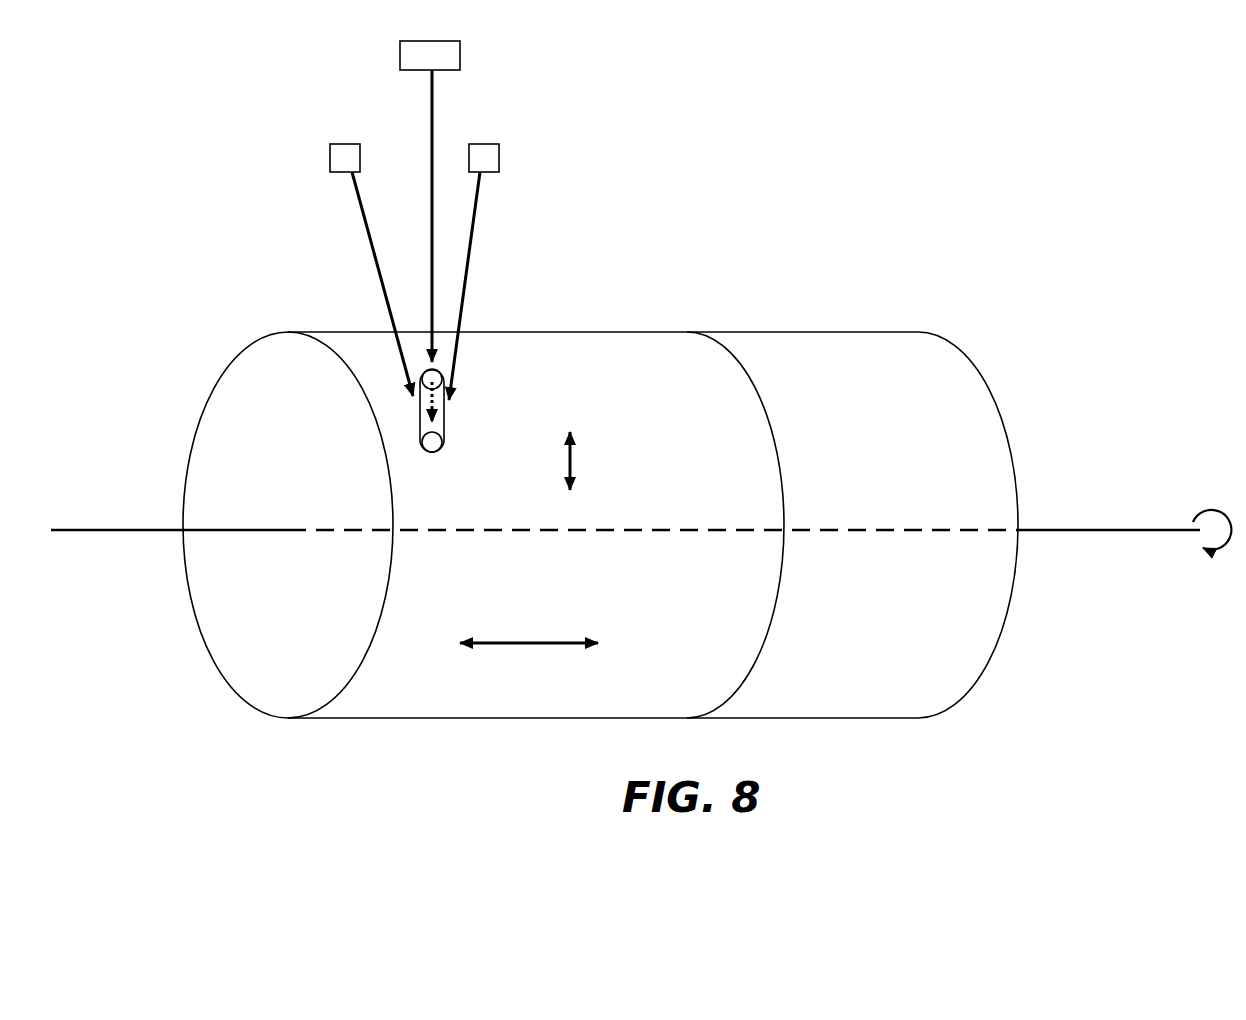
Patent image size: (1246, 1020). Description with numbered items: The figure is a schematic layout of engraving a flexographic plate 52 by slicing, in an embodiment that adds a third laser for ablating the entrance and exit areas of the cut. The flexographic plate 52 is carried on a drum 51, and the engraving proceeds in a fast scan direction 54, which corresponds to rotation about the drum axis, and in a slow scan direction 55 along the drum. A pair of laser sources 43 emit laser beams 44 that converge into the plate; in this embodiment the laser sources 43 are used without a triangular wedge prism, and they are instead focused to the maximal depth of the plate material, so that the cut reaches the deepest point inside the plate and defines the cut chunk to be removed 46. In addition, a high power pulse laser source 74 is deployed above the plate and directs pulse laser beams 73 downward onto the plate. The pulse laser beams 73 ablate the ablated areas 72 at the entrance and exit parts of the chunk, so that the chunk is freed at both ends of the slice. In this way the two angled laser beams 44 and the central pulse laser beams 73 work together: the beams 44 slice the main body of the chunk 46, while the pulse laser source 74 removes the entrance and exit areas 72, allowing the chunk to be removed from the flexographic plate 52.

The laser sources 43 is at (340, 144).
The laser beams 44 is at (360, 203).
The cut chunk to be removed 46 is at (420, 405).
The drum 51 is at (852, 525).
The flexographic plate 52 is at (483, 525).
The fast scan direction (or drum rotation axis) 54 is at (575, 461).
The slow scan direction 55 is at (520, 643).
The ablated area created by pulse laser for the plate entrance and exit parts 72 is at (442, 375).
The pulse laser beams 73 is at (432, 100).
The high power pulse laser source 74 is at (460, 54).